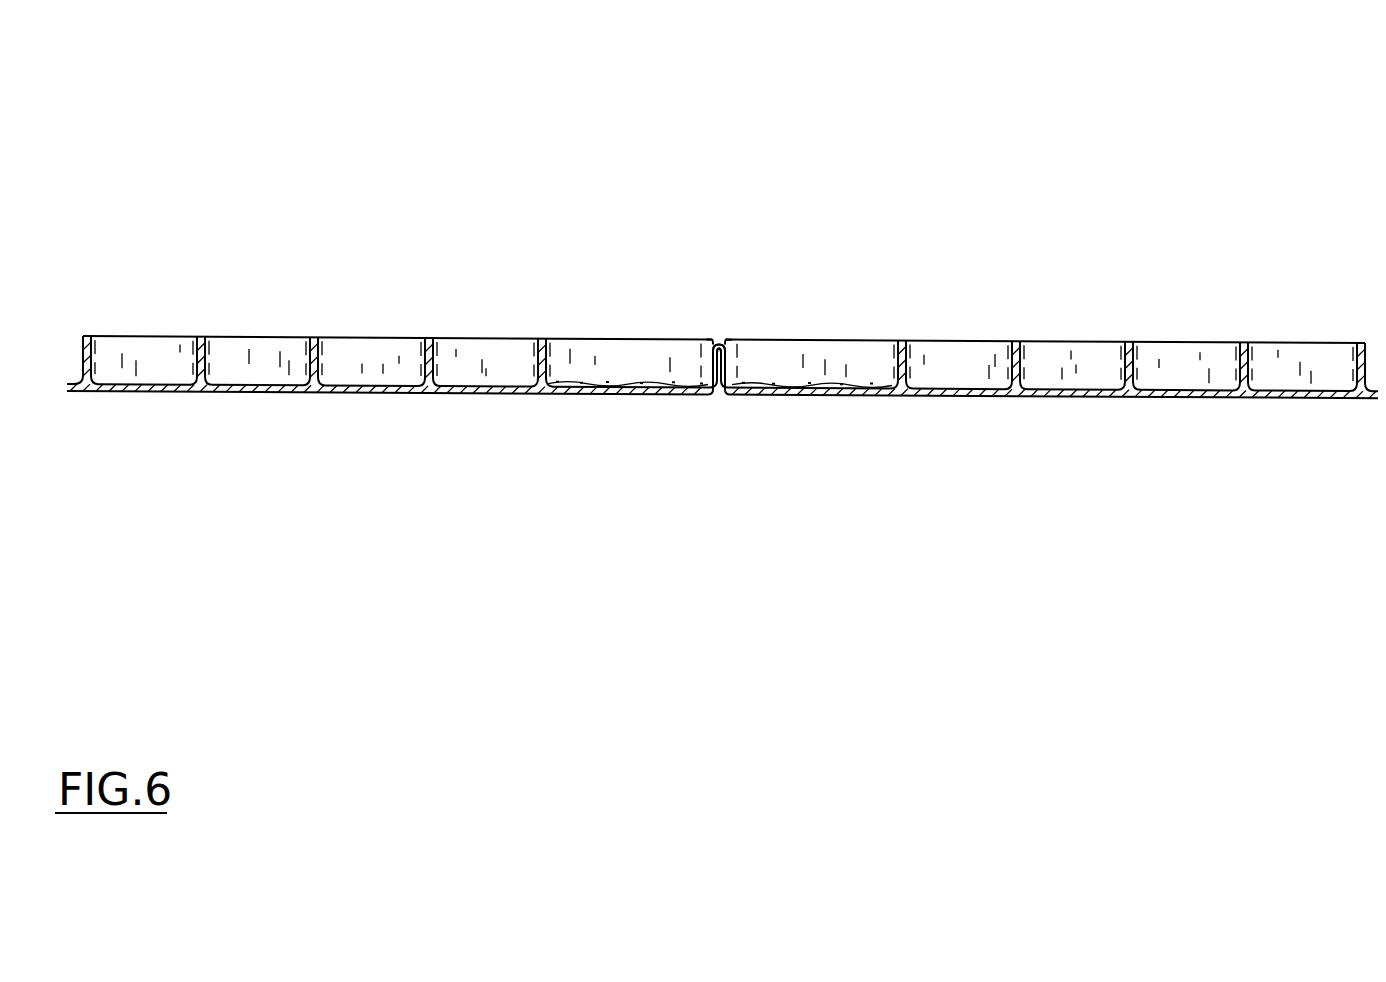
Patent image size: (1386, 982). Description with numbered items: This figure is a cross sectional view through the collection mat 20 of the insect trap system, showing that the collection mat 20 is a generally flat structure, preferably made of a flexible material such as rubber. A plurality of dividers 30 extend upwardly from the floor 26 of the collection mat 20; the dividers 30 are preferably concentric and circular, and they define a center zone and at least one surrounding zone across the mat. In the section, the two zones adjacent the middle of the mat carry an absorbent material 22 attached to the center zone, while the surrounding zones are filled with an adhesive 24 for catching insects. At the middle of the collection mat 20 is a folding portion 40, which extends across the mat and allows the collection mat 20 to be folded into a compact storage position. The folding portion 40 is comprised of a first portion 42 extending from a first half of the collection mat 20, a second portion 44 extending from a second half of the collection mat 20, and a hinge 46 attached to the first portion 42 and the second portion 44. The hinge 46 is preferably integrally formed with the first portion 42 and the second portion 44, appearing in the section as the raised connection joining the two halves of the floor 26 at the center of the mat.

The collection mat 20 is at (722, 321).
The absorbent material 22 is at (653, 384).
The adhesive 24 is at (161, 337).
The floor 26 is at (260, 393).
The dividers 30 is at (312, 337).
The folding portion 40 is at (715, 322).
The first portion 42 is at (739, 341).
The second portion 44 is at (707, 339).
The hinge 46 is at (727, 338).